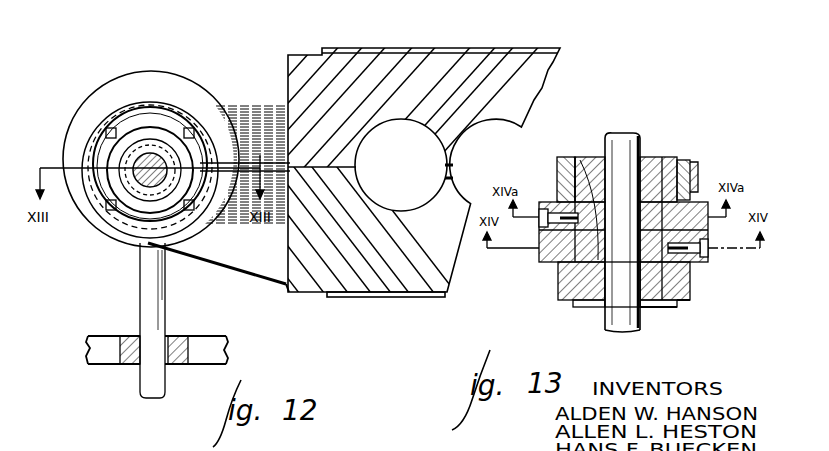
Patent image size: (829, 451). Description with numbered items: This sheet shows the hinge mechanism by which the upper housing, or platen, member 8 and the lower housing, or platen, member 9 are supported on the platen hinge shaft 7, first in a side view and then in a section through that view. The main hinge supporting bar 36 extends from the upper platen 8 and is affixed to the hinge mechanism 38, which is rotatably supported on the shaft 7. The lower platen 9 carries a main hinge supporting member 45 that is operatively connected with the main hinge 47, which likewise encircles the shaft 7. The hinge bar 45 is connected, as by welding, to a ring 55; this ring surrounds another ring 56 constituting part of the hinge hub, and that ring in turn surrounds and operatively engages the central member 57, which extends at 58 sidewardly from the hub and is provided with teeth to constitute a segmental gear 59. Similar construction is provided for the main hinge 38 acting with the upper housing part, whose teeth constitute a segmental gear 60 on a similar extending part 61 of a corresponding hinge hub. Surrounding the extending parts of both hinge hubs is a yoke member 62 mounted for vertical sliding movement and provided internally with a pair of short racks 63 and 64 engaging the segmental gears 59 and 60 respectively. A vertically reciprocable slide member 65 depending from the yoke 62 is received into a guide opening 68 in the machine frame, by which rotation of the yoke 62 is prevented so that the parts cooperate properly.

In FIG. 13, the platen hinge shaft 7 is at (612, 330).
In FIG. 12, the upper housing (platen) member 8 is at (372, 92).
In FIG. 12, the lower housing (platen) member 9 is at (366, 258).
In FIG. 12, the main hinge supporting bar 36 is at (290, 86).
In FIG. 13, the main hinge supporting bar 36 is at (698, 168).
In FIG. 13, the hinge mechanism (main hinge) 38 is at (685, 152).
In FIG. 12, the main hinge supporting member 45 is at (282, 258).
In FIG. 12, the main hinge 47 is at (80, 90).
In FIG. 13, the main hinge 47 is at (700, 304).
In FIG. 12, the ring 55 is at (172, 232).
In FIG. 13, the ring 55 is at (690, 278).
In FIG. 12, the ring 56 is at (134, 217).
In FIG. 13, the ring 56 is at (680, 306).
In FIG. 12, the central member 57 is at (130, 198).
In FIG. 13, the central member 57 is at (656, 308).
In FIG. 13, the extending part 58 is at (622, 284).
In FIG. 12, the segmental gear 59 is at (150, 181).
In FIG. 12, the segmental gear 60 is at (128, 150).
In FIG. 13, the segmental gear 60 is at (622, 231).
In FIG. 13, the extending part 61 is at (565, 268).
In FIG. 12, the yoke member 62 is at (190, 100).
In FIG. 13, the yoke member 62 is at (710, 252).
In FIG. 12, the short rack 63 is at (210, 122).
In FIG. 13, the short rack 63 is at (700, 204).
In FIG. 12, the short rack 64 is at (106, 136).
In FIG. 13, the short rack 64 is at (545, 250).
In FIG. 12, the slide member 65 is at (153, 303).
In FIG. 12, the guide opening 68 is at (138, 334).